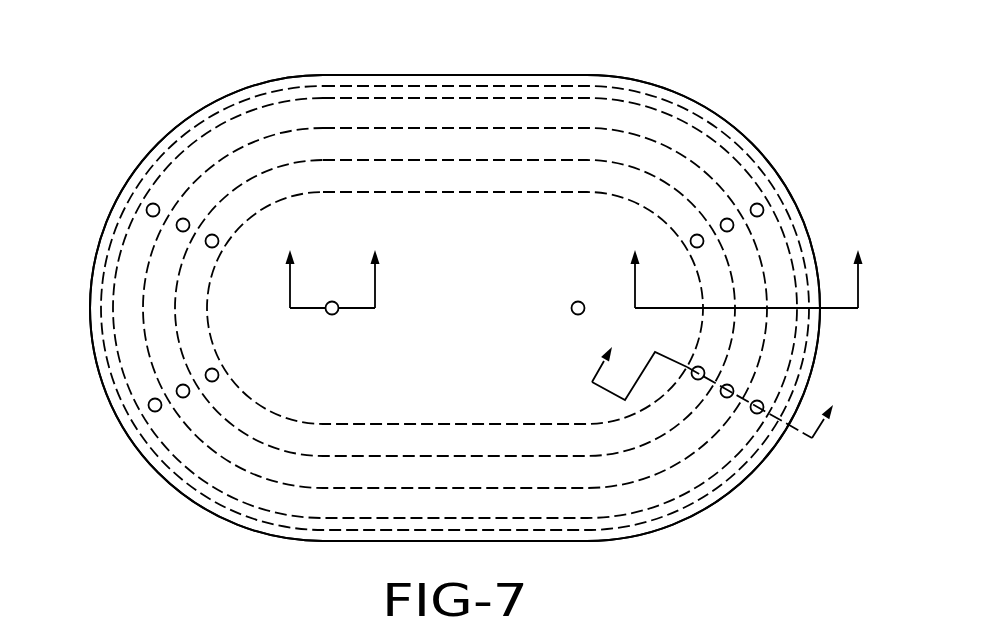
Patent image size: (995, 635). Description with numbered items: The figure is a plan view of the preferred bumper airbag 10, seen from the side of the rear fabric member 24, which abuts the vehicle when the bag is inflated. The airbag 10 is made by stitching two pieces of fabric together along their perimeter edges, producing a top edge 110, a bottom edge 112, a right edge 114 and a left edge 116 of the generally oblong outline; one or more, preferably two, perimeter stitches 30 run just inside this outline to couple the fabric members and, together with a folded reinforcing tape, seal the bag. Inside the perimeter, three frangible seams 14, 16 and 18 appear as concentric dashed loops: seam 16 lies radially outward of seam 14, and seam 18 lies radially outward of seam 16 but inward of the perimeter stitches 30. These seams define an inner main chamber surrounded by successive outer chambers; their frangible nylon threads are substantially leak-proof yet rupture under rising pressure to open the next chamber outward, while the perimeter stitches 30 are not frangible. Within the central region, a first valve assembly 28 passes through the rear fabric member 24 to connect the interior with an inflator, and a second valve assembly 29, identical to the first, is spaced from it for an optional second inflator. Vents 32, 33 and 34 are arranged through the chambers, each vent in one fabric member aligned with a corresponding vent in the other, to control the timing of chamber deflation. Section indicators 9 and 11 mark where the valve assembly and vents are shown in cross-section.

The bumper airbag 10 is at (750, 122).
The top edge 110 is at (465, 76).
The bottom edge 112 is at (515, 542).
The right edge 114 is at (90, 278).
The left edge 116 is at (812, 241).
The frangible seam 14 is at (388, 423).
The frangible seam 16 is at (453, 457).
The frangible seam 18 is at (290, 483).
The rear fabric member 24 is at (520, 210).
The first valve assembly 28 is at (330, 315).
The second valve assembly 29 is at (571, 309).
The perimeter stitches 30 is at (703, 482).
The vent 32 is at (205, 245).
The vent 33 is at (183, 218).
The vent 34 is at (147, 206).
The section line 9- 9 is at (748, 265).
The section line 11- 11 is at (723, 378).